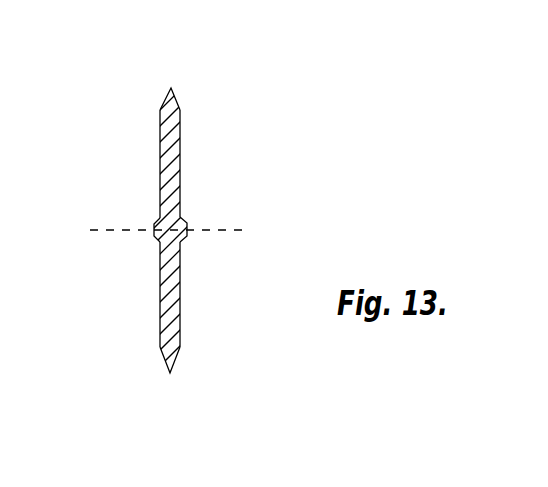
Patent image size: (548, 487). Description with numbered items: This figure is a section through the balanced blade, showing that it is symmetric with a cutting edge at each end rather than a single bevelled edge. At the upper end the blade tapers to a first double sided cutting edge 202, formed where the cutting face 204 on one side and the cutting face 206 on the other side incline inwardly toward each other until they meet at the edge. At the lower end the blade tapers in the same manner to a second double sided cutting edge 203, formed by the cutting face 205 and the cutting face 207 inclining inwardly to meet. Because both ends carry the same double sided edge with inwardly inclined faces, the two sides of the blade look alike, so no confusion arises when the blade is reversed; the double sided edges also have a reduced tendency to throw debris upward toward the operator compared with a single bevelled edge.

The double sided cutting edge 202 is at (172, 87).
The double sided cutting edge 203 is at (172, 373).
The cutting face 204 is at (165, 101).
The cutting face 205 is at (165, 362).
The cutting face 206 is at (177, 98).
The cutting face 207 is at (180, 358).